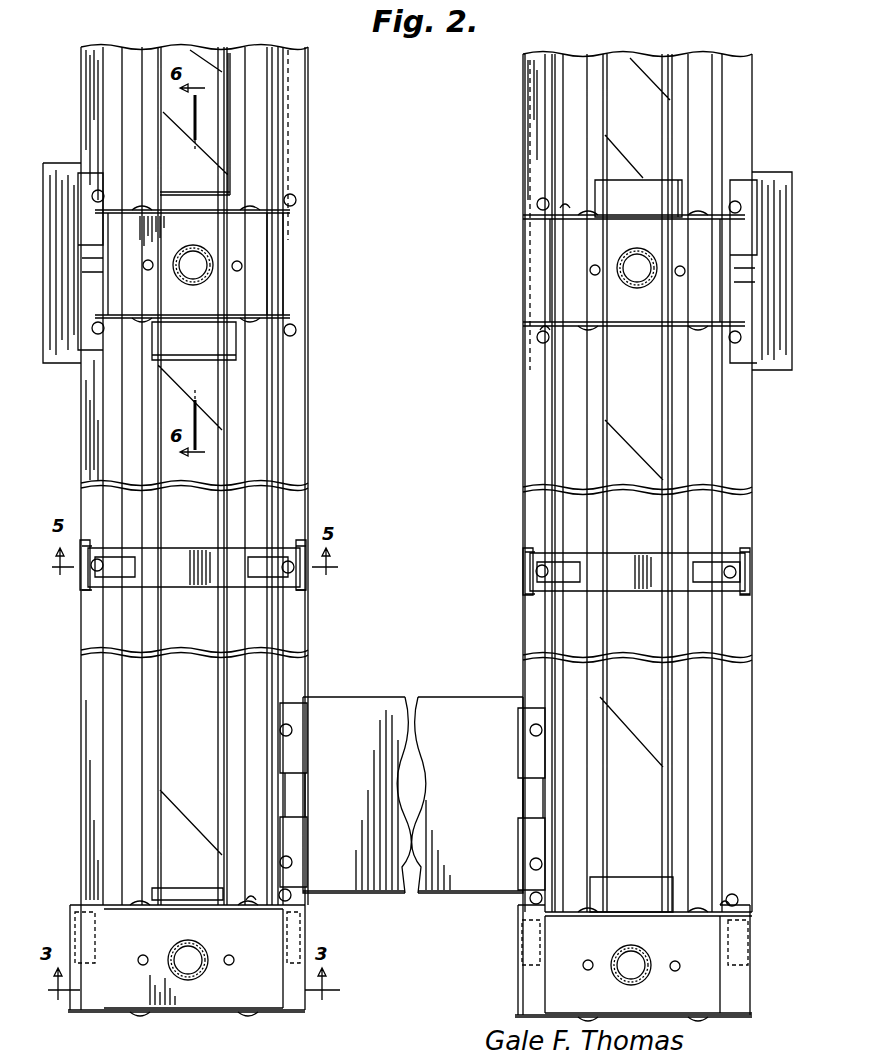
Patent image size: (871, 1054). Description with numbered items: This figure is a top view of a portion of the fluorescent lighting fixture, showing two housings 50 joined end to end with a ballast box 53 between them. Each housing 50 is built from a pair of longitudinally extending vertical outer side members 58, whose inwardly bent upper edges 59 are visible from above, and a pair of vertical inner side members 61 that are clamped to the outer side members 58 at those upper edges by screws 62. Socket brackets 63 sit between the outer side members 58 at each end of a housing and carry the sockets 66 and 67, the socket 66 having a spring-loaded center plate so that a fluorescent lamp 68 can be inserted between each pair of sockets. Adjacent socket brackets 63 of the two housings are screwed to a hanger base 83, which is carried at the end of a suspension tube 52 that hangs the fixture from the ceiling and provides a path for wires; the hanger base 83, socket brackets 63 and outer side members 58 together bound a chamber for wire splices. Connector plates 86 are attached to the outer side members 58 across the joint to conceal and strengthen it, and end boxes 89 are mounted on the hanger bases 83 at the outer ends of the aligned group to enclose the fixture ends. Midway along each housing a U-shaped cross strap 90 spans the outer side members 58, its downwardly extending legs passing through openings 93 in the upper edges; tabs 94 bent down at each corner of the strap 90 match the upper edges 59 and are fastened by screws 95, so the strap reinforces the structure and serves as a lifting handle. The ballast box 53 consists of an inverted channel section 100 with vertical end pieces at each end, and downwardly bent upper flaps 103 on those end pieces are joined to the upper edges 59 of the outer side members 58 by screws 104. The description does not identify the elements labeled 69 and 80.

The housing 50 is at (320, 462).
The suspension tube 52 is at (212, 258).
The ballast box 53 is at (55, 170).
The outer side member 58 is at (300, 510).
The upper edge 59 is at (308, 521).
The inner side member 61 is at (283, 366).
The screw 62 is at (292, 902).
The socket bracket 63 is at (248, 904).
The socket 66 is at (153, 344).
The socket 67 is at (246, 210).
The fluorescent lamp 68 is at (220, 50).
The strip 69 is at (259, 56).
The bolt 80 is at (528, 900).
The hanger base 83 is at (276, 262).
The connector plate 86 is at (302, 410).
The end box 89 is at (283, 1012).
The cross strap 90 is at (176, 554).
The opening 93 is at (302, 546).
The tab 94 is at (96, 538).
The screw 95 is at (90, 568).
The inverted channel section 100 is at (397, 905).
The upper flap 103 is at (302, 765).
The screw 104 is at (292, 732).